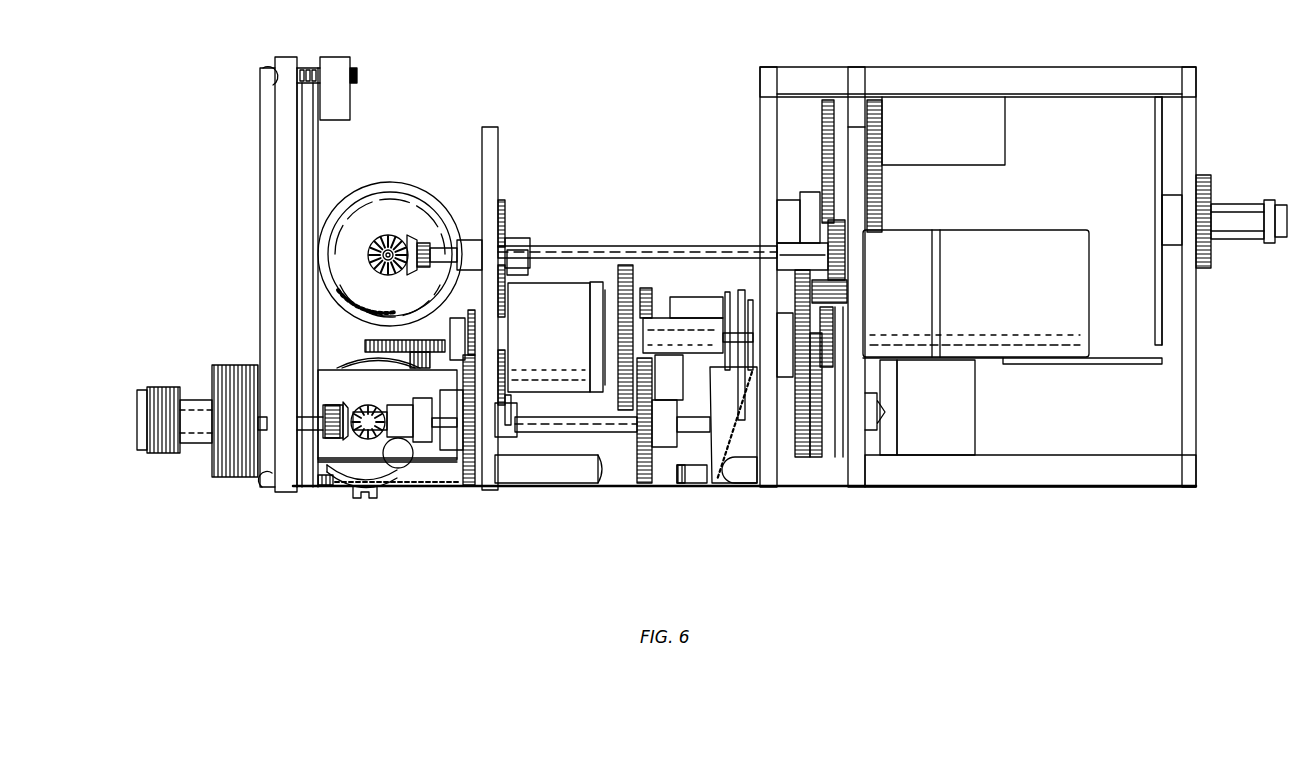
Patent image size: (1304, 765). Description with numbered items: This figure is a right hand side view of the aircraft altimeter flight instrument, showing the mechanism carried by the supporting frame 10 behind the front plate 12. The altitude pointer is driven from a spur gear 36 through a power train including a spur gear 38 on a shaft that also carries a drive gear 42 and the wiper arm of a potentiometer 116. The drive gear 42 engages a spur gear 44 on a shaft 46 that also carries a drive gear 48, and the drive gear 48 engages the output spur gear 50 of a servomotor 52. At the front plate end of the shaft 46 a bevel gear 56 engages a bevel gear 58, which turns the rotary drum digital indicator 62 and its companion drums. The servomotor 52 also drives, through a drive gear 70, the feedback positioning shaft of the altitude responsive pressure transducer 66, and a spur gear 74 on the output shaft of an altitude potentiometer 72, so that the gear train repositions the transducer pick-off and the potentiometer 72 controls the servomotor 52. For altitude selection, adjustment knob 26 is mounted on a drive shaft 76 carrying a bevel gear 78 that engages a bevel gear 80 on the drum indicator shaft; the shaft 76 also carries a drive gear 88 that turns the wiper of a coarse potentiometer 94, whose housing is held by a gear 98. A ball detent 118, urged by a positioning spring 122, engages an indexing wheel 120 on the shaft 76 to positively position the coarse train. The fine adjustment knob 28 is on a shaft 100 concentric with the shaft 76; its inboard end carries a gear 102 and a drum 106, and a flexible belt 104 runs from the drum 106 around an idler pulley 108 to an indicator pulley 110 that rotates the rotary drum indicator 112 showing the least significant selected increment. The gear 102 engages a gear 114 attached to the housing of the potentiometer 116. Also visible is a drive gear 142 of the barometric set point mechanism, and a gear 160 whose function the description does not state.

The supporting frame 10 is at (1204, 448).
The front plate 12 is at (280, 492).
The adjustment knob 26 is at (233, 462).
The adjustment knob 28 is at (163, 437).
The spur gear 36 is at (504, 212).
The spur gear 38 is at (510, 396).
The drive gear 42 is at (800, 457).
The spur gear 44 is at (777, 250).
The shaft 46 is at (596, 250).
The drive gear 48 is at (840, 258).
The output spur gear 50 is at (847, 293).
The servomotor 52 is at (1063, 263).
The bevel gear 56 is at (421, 240).
The bevel gear 58 is at (392, 236).
The rotary drum digital indicator 62 is at (416, 183).
The pressure transducer 66 is at (1090, 171).
The drive gear 70 is at (832, 100).
The altitude potentiometer 72 is at (950, 420).
The spur gear 74 is at (820, 457).
The drive shaft 76 is at (320, 437).
The bevel gear 78 is at (333, 406).
The bevel gear 80 is at (366, 406).
The drive gear 88 is at (470, 486).
The potentiometer 94 is at (562, 326).
The gear 98 is at (628, 265).
The shaft 100 is at (588, 420).
The gear 102 is at (645, 484).
The flexible belt 104 is at (614, 484).
The drum 106 is at (746, 445).
The idler pulley 108 is at (690, 484).
The indicator pulley 110 is at (352, 470).
The rotary drum indicator 112 is at (352, 362).
The gear 114 is at (650, 288).
The potentiometer 116 is at (707, 300).
The ball detent 118 is at (400, 468).
The indexing wheel 120 is at (400, 406).
The positioning spring 122 is at (432, 463).
The drive gear 142 is at (366, 345).
The gear 160 is at (877, 100).